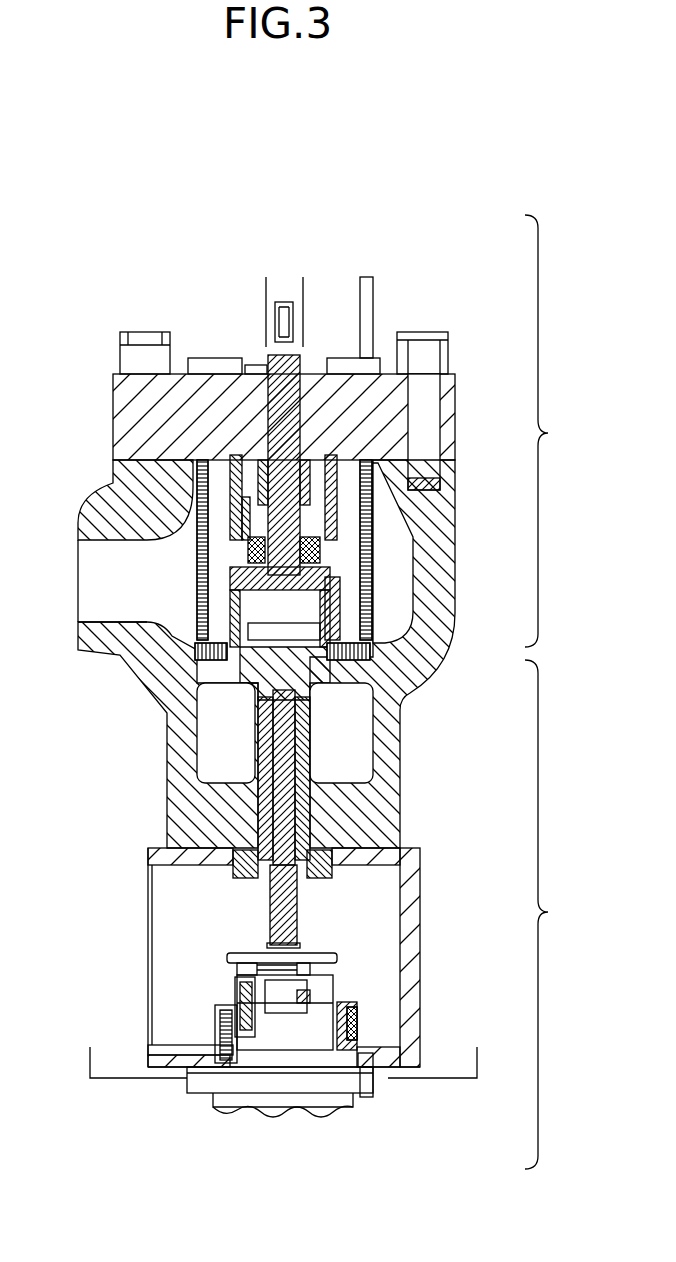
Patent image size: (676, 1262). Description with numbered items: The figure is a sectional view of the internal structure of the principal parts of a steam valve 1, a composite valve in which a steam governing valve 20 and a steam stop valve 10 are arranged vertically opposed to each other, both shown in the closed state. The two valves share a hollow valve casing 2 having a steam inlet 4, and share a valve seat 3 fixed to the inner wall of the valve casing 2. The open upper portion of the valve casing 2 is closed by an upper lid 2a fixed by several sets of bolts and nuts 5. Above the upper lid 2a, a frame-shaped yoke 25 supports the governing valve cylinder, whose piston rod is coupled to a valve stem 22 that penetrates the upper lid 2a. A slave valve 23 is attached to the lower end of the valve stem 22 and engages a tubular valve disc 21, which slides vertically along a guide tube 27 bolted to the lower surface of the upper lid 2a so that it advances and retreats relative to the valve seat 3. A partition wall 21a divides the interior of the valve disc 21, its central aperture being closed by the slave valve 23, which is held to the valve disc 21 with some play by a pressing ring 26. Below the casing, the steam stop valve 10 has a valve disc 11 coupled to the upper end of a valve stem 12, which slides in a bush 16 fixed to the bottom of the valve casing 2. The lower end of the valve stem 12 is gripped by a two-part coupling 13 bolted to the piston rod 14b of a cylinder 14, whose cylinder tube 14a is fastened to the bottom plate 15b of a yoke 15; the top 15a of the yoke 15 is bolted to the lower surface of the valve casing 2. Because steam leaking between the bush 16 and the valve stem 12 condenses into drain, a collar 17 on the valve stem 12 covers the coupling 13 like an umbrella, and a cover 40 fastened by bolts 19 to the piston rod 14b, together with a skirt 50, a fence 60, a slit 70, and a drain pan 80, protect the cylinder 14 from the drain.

The steam valve 1 is at (101, 293).
The valve casing 2 is at (112, 468).
The upper lid 2a is at (113, 386).
The valve seat 3 is at (232, 687).
The steam inlet 4 is at (98, 622).
The bolts and nuts 5 is at (143, 337).
The steam stop valve 10 is at (558, 914).
The valve disc 11 is at (323, 677).
The valve stem 12 is at (270, 921).
The coupling 13 is at (333, 986).
The cylinder 14 is at (206, 1115).
The cylinder tube 14a is at (352, 1105).
The piston rod 14b is at (235, 1010).
The yoke 15 is at (406, 927).
The top 15a is at (408, 850).
The bottom plate 15b is at (162, 1045).
The bush 16 is at (310, 742).
The collar 17 is at (228, 960).
The bolts 19 is at (237, 972).
The steam governing valve 20 is at (555, 431).
The valve disc 21 is at (230, 615).
The partition wall 21a is at (297, 638).
The valve stem 22 is at (268, 360).
The slave valve 23 is at (255, 577).
The yoke 25 is at (371, 293).
The pressing ring 26 is at (245, 548).
The guide tube 27 is at (228, 517).
The cover 40 is at (308, 1002).
The skirt 50 is at (355, 1012).
The fence 60 is at (347, 1020).
The slit 70 is at (217, 1042).
The drain pan 80 is at (90, 1070).